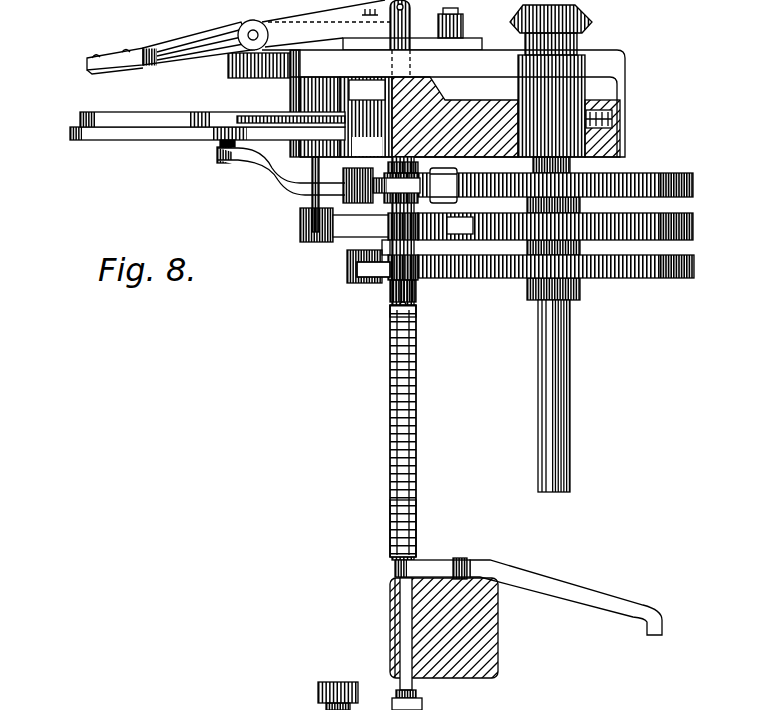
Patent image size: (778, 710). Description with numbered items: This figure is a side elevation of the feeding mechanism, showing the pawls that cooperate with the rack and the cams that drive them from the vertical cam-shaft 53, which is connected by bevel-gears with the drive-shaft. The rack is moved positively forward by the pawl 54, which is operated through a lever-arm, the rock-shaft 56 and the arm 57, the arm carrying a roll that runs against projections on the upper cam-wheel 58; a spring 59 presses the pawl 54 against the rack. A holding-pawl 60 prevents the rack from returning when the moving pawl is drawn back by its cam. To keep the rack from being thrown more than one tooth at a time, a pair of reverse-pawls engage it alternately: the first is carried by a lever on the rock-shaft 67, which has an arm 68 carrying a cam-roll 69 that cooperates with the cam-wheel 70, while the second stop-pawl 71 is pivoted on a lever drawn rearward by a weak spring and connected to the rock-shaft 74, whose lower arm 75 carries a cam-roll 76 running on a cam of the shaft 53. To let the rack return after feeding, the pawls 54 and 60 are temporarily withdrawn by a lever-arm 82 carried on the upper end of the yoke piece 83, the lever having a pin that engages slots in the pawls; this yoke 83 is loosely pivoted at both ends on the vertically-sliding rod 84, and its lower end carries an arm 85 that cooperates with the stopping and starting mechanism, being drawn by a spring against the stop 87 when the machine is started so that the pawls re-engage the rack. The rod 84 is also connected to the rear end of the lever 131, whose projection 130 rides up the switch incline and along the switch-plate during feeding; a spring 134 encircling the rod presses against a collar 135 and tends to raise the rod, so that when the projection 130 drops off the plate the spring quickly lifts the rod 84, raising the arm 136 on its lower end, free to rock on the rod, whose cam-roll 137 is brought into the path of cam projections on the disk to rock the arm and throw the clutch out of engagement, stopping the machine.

The vertical cam-shaft 53 is at (568, 415).
The pawl 54 is at (78, 120).
The rock-shaft 56 is at (366, 117).
The arm 57 is at (347, 205).
The upper cam-wheel 58 is at (695, 183).
The spring 59 is at (255, 118).
The holding-pawl 60 is at (72, 140).
The rock-shaft 67 is at (310, 202).
The arm 68 is at (352, 228).
The cam-roll 69 is at (436, 226).
The cam-wheel 70 is at (695, 224).
The second stop-pawl 71 is at (696, 266).
The rock-shaft 74 is at (355, 248).
The arm 75 is at (377, 268).
The cam-roll 76 is at (427, 282).
The lever-arm 82 is at (273, 173).
The yoke piece 83 is at (422, 432).
The vertically-sliding rod 84 is at (415, 510).
The arm 85 is at (575, 588).
The stop 87 is at (470, 560).
The projection 130 is at (85, 62).
The lever 131 is at (210, 35).
The spring 134 is at (392, 406).
The collar 135 is at (390, 312).
The arm 136 is at (370, 709).
The cam-roll 137 is at (317, 690).